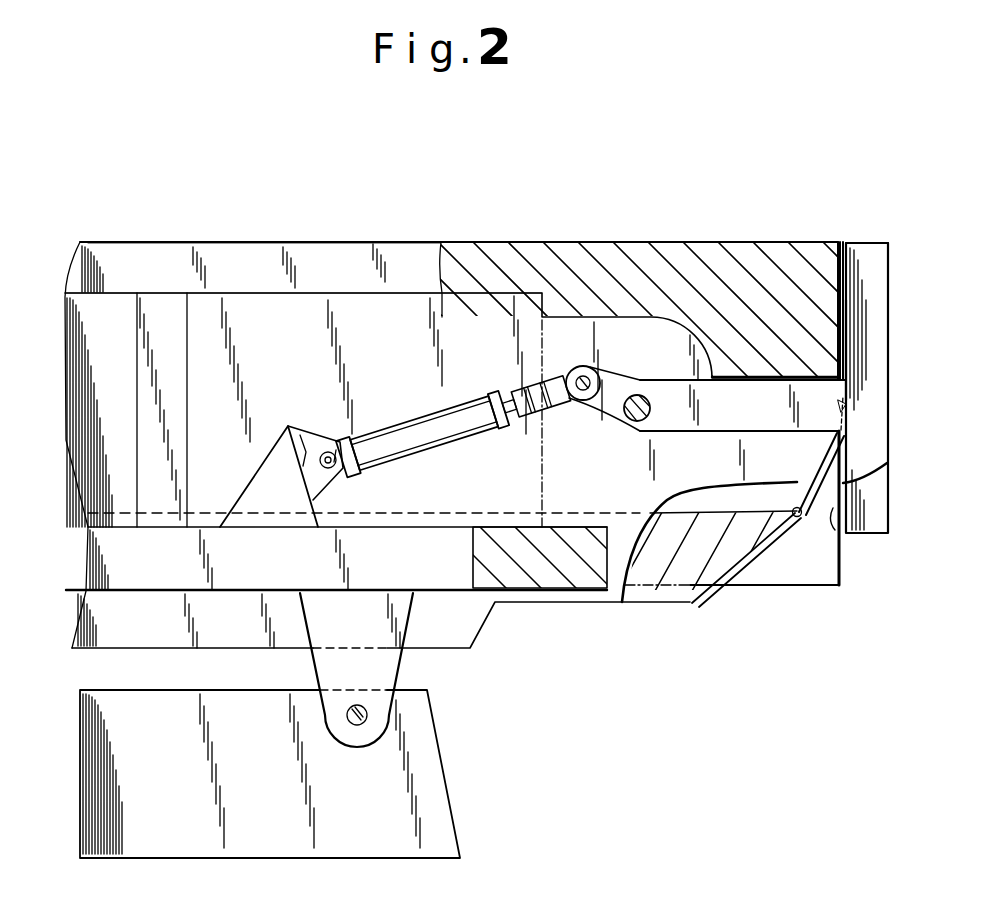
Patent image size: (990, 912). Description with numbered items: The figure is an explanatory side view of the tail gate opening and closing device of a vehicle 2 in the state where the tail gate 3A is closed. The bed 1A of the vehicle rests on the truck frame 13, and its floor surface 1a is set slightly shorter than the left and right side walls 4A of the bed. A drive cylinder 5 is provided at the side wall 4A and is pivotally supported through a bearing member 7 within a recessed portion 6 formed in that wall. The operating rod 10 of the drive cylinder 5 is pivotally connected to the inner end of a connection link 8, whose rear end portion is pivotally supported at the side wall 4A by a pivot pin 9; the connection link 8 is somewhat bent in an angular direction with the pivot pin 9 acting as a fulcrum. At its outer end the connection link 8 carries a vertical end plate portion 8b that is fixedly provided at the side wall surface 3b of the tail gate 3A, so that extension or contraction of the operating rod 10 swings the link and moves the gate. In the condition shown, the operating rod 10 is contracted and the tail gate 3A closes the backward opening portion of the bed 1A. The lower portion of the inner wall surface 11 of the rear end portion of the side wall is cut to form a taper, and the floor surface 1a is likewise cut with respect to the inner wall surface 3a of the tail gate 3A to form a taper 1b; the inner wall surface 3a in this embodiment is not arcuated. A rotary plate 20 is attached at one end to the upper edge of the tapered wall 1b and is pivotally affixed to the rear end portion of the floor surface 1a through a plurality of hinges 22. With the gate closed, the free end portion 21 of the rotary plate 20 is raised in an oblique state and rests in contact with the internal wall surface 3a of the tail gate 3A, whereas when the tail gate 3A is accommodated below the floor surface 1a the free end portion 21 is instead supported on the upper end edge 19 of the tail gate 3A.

The bed 1A is at (723, 257).
The floor surface 1a is at (700, 505).
The taper 1b is at (732, 563).
The vehicle 2 is at (840, 203).
The tail gate 3A is at (880, 307).
The inner wall surface of the tail gate 3a is at (840, 532).
The side wall surface of the tail gate 3b is at (877, 517).
The side wall of the bed 4A is at (427, 255).
The drive cylinder 5 is at (403, 415).
The recessed portion 6 is at (362, 330).
The bearing member 7 is at (315, 440).
The connection link 8 is at (777, 434).
The vertical end plate portion 8b is at (870, 353).
The pivot pin 9 is at (643, 424).
The operating rod 10 is at (502, 388).
The inner wall surface 11 is at (572, 602).
The truck frame 13 is at (423, 758).
The upper end edge of the tail gate 19 is at (870, 240).
The rotary plate 20 is at (833, 447).
The free end portion 21 is at (847, 402).
The hinge 22 is at (798, 516).